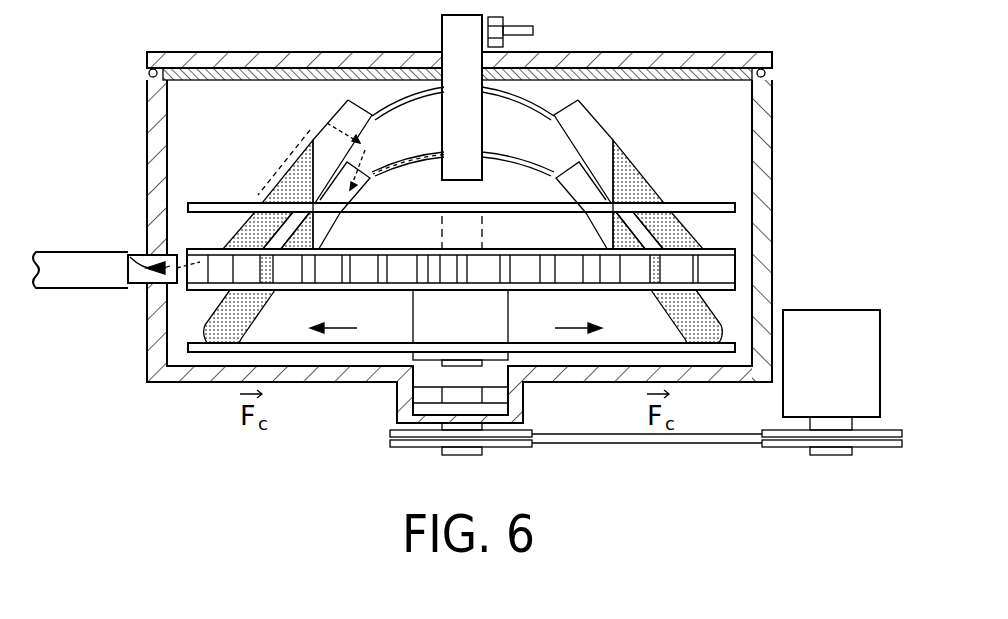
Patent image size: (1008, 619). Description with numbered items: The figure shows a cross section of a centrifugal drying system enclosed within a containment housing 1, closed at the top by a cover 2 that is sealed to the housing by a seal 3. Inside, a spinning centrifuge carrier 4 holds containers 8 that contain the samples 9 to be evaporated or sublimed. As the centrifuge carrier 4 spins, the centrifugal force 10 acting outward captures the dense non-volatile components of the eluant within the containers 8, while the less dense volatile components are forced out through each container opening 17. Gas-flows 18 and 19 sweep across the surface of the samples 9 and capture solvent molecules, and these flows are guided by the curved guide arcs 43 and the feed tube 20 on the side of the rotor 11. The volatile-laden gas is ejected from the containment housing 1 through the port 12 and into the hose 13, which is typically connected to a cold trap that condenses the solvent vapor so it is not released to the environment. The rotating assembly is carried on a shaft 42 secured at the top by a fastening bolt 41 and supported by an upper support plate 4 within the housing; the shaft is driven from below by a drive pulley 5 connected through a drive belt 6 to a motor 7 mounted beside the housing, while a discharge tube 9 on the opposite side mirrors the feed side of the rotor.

The containment housing 1 is at (147, 110).
The cover 2 is at (205, 52).
The seal 3 is at (199, 80).
The centrifuge carrier 4 is at (703, 203).
The drive pulley 5 is at (390, 433).
The drive belt 6 is at (597, 433).
The motor 7 is at (783, 413).
The containers 8 is at (592, 116).
The samples 9 is at (680, 328).
The centrifugal force 10 is at (343, 330).
The rotor 11 is at (190, 262).
The port 12 is at (135, 258).
The hose 13 is at (66, 262).
The container opening 17 is at (573, 162).
The gas-flow 18 is at (390, 180).
The gas-flow 19 is at (332, 222).
The feed tube 20 is at (279, 167).
The fastening bolt 41 is at (503, 20).
The shaft 42 is at (442, 22).
The guide arcs 43 is at (408, 152).